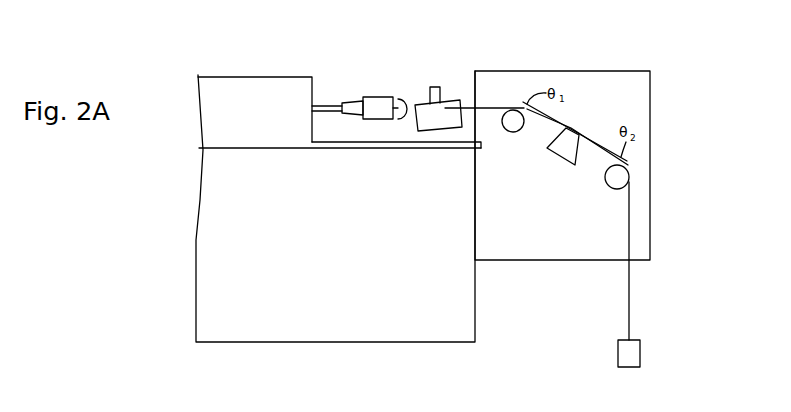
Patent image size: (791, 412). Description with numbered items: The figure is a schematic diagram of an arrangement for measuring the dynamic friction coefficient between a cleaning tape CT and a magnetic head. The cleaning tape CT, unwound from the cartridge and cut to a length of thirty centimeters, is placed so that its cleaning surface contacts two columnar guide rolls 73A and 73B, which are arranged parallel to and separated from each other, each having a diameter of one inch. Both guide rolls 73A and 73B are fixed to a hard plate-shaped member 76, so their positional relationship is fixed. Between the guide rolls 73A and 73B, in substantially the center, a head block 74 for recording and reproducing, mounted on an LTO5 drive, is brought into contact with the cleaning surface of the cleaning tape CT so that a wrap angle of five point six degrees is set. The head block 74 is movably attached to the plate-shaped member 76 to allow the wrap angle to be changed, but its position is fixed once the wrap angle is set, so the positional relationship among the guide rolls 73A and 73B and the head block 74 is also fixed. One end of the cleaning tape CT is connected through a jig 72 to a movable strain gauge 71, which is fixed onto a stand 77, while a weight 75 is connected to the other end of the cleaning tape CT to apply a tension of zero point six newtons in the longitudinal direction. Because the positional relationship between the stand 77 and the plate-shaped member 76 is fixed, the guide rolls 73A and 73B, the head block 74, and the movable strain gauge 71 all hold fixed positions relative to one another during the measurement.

The movable strain gauge 71 is at (282, 77).
The jig 72 is at (448, 100).
The guide roll 73A is at (512, 132).
The guide roll 73B is at (611, 189).
The head block 74 is at (558, 166).
The weight 75 is at (642, 356).
The plate-shaped member 76 is at (600, 71).
The stand 77 is at (344, 149).
The cleaning tape CT is at (630, 238).